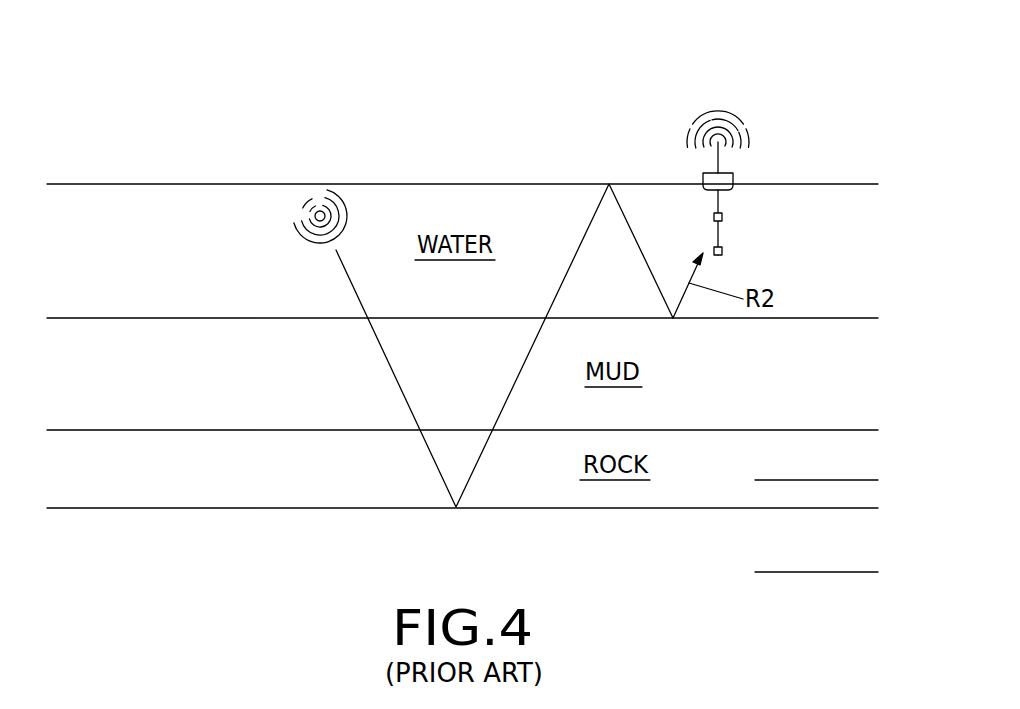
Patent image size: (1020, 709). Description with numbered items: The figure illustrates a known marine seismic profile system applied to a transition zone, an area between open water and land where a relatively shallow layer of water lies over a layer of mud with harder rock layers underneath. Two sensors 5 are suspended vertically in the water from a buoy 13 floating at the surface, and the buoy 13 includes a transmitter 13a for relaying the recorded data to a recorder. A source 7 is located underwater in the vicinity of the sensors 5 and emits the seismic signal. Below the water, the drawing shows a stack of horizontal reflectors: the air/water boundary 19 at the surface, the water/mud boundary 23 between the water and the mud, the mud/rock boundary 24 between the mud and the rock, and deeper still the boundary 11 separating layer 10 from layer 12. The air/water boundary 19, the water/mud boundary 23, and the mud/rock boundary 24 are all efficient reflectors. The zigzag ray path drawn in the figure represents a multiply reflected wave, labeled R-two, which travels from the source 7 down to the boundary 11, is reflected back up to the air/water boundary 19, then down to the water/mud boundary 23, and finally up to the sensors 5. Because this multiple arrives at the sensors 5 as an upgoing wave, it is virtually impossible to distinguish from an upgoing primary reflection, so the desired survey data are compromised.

The air/water boundary 19 is at (167, 183).
The source 7 is at (324, 210).
The transmitter 13a is at (717, 156).
The buoy 13 is at (733, 173).
The sensors 5 is at (724, 216).
The water/mud boundary 23 is at (280, 317).
The mud/rock boundary 24 is at (283, 429).
The boundary 11 is at (155, 508).
The layer 10 is at (816, 465).
The layer 12 is at (816, 557).